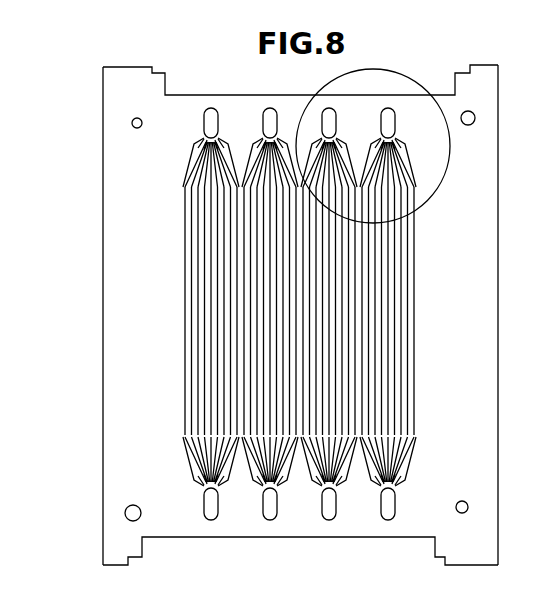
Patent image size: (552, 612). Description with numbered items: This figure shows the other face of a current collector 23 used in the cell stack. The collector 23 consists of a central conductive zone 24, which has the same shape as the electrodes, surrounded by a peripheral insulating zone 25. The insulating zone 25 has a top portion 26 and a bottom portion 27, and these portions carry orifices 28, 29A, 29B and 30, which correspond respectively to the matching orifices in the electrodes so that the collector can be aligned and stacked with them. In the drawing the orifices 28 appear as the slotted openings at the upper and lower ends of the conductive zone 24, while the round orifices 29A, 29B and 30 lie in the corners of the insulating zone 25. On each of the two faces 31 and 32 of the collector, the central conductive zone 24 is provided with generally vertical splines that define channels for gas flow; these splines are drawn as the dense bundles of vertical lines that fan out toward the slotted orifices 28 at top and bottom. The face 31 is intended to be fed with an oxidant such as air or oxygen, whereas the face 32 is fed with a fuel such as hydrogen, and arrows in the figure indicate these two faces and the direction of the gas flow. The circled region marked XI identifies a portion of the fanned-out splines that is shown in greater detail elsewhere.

The current collector 23 is at (99, 62).
The central conductive zone 24 is at (400, 245).
The peripheral insulating zone 25 is at (132, 392).
The top portion of the insulating zone 26 is at (240, 112).
The bottom portion of the insulating zone 27 is at (357, 500).
The orifices 28 is at (211, 108).
The orifice 29A is at (475, 118).
The orifice 29B is at (125, 515).
The orifices 30 is at (132, 122).
The face of the collector fed with oxidant 31 is at (146, 324).
The face of the collector fed with fuel 32 is at (167, 165).
The detail circle XI is at (418, 85).